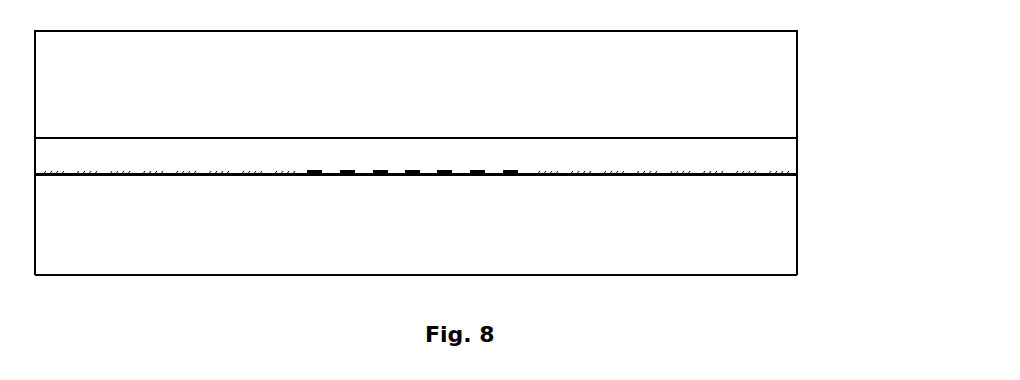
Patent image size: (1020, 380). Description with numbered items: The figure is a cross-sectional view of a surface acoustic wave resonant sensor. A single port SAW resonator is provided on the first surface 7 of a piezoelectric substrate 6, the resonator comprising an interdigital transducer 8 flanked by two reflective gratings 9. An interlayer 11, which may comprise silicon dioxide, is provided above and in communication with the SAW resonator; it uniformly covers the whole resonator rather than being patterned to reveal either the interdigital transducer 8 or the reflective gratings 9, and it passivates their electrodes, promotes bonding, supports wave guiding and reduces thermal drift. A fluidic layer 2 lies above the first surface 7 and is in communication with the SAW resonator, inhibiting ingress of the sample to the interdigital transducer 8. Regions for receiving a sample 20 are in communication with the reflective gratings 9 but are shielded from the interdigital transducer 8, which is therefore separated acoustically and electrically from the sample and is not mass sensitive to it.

The fluidic layer 2 is at (755, 114).
The piezoelectric substrate 6 is at (283, 204).
The first surface 7 is at (798, 175).
The interdigital transducer 8 is at (403, 176).
The reflective grating 9 is at (143, 176).
The interlayer 11 is at (775, 155).
The region for receiving a sample 20 is at (188, 165).